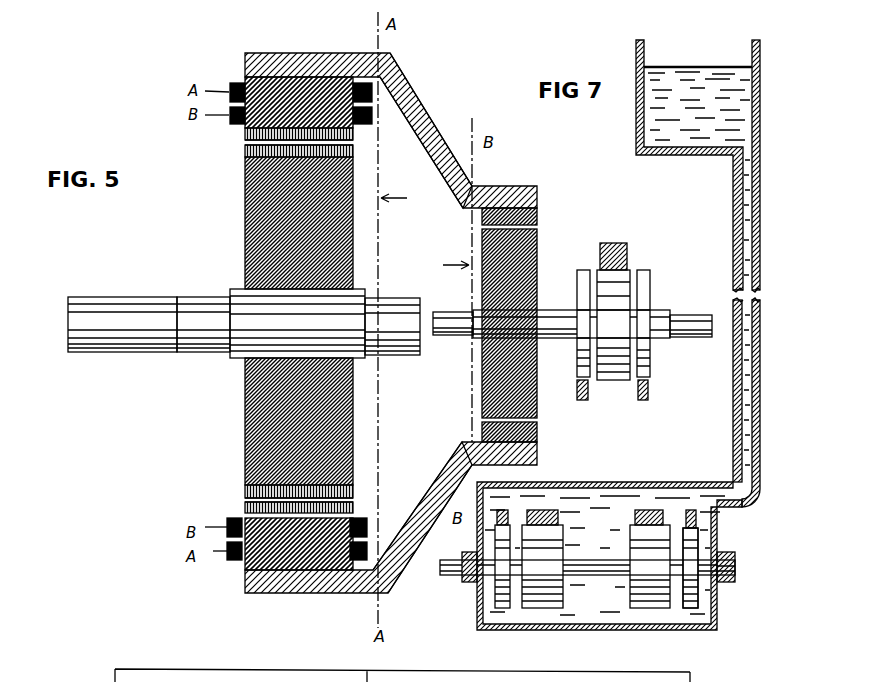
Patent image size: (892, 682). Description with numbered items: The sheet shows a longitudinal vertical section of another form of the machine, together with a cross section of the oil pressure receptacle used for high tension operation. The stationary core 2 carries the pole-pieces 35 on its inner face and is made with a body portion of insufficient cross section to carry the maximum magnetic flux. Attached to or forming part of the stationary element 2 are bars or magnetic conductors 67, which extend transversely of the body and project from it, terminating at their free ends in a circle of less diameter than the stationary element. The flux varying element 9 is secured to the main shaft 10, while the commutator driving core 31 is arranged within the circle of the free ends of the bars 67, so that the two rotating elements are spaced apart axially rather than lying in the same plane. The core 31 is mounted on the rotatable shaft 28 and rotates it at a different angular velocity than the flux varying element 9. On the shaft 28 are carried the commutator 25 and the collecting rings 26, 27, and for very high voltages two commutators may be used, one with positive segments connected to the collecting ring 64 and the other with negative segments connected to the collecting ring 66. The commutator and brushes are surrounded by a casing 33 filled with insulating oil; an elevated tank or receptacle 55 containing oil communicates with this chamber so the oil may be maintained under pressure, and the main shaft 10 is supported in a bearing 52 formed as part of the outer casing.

In FIG. 5, the stationary core 2 is at (245, 78).
In FIG. 5, the pole-pieces 35 is at (315, 76).
In FIG. 5, the bars or magnetic conductors 67 is at (418, 110).
In FIG. 5, the flux varying element 9 is at (245, 222).
In FIG. 5, the main shaft 10 is at (190, 305).
In FIG. 5, the rotating core 31 is at (525, 263).
In FIG. 5, the rotatable shaft 28 is at (555, 322).
In FIG. 5, the collecting ring 26 is at (583, 357).
In FIG. 5, the commutator 25 is at (620, 282).
In FIG. 5, the collecting ring 27 is at (652, 293).
In FIG. 5, the casing 33 is at (637, 481).
In FIG. 5, the collecting ring 66 is at (497, 590).
In FIG. 5, the collecting ring 64 is at (698, 598).
In FIG. 7, the elevated tank or receptacle 55 is at (745, 92).
In FIG. 7, the bearing 52 is at (761, 383).